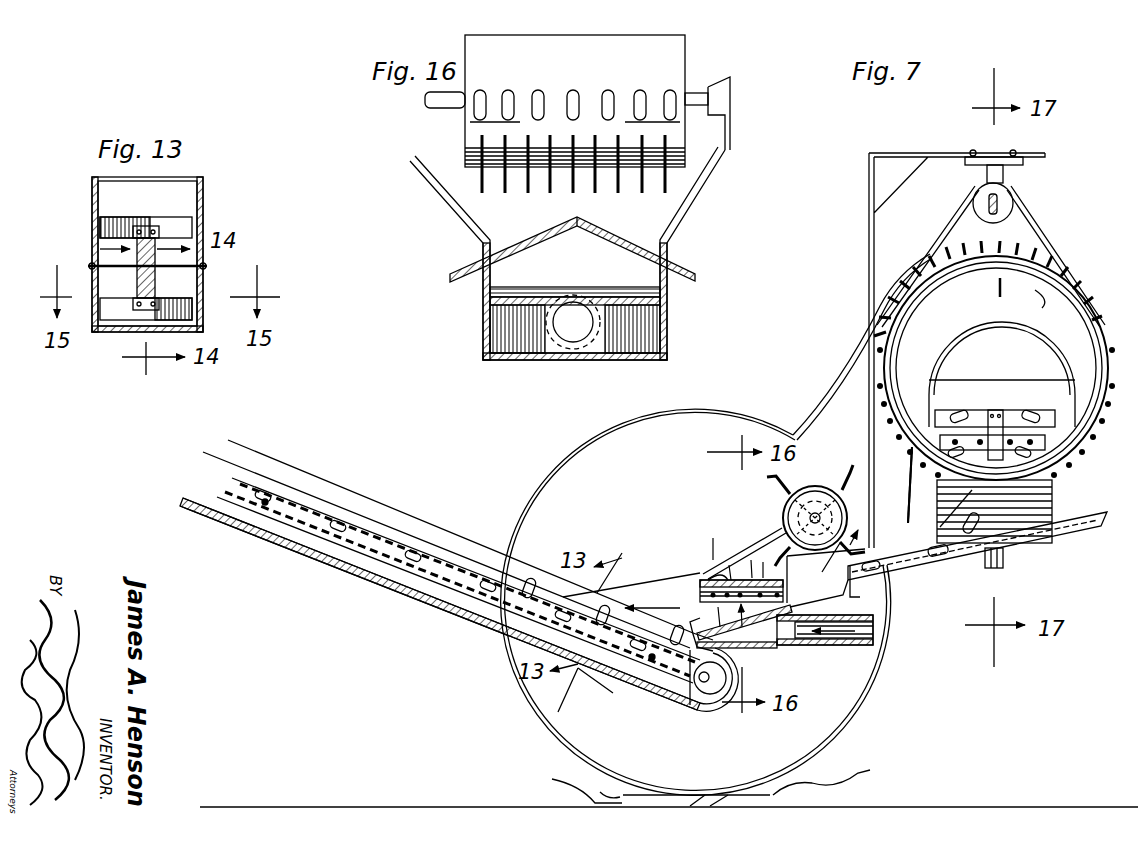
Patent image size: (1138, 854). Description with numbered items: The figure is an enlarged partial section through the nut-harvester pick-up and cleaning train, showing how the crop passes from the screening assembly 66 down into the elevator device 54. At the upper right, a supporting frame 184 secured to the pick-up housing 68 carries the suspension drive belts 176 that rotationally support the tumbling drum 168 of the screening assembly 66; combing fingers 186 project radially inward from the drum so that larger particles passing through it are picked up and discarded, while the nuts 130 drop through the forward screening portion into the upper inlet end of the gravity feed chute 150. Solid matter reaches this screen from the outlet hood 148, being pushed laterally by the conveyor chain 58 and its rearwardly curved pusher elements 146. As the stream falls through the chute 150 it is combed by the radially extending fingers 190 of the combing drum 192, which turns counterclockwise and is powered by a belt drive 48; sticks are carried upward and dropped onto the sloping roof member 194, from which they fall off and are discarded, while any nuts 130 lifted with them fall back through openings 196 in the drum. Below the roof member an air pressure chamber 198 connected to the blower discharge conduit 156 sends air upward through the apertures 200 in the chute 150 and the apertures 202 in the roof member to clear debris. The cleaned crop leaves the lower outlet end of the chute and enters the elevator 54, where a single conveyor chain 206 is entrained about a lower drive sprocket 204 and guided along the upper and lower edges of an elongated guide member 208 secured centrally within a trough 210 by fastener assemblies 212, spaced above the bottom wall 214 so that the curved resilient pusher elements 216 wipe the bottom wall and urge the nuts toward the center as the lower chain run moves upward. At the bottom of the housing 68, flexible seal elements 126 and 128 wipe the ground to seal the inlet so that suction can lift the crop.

In FIG. 7, the belt drive 48 is at (752, 548).
In FIG. 7, the elevator device 54 is at (362, 580).
In FIG. 7, the conveyor chain 58 is at (1005, 562).
In FIG. 7, the rotatable screening assembly 66 is at (1088, 258).
In FIG. 7, the housing 68 is at (590, 448).
In FIG. 7, the flexible seal element 126 is at (638, 780).
In FIG. 7, the flexible seal element 128 is at (786, 782).
In FIG. 7, the nuts 130 is at (930, 549).
In FIG. 7, the resilient pusher elements 146 is at (1012, 410).
In FIG. 7, the outlet hood 148 is at (940, 356).
In FIG. 16, the gravity feed chute 150 is at (645, 300).
In FIG. 7, the gravity feed chute 150 is at (962, 562).
In FIG. 7, the blower discharge conduit 156 is at (845, 645).
In FIG. 7, the tumbling drum 168 is at (955, 262).
In FIG. 7, the suspension drive belts 176 is at (1040, 240).
In FIG. 7, the supporting frame 184 is at (900, 153).
In FIG. 7, the combing fingers 186 is at (1000, 292).
In FIG. 16, the combing fingers 190 is at (640, 180).
In FIG. 7, the combing fingers 190 is at (772, 487).
In FIG. 16, the combing drum 192 is at (665, 56).
In FIG. 7, the combing drum 192 is at (830, 486).
In FIG. 16, the sloping roof member 194 is at (470, 264).
In FIG. 7, the sloping roof member 194 is at (705, 567).
In FIG. 16, the openings 196 is at (630, 96).
In FIG. 7, the openings 196 is at (809, 487).
In FIG. 16, the air pressure chamber 198 is at (628, 340).
In FIG. 7, the air pressure chamber 198 is at (790, 642).
In FIG. 16, the apertures 200 is at (495, 300).
In FIG. 7, the apertures 200 is at (755, 646).
In FIG. 16, the apertures 202 is at (515, 250).
In FIG. 7, the lower drive sprocket 204 is at (685, 688).
In FIG. 13, the conveyor chain 206 is at (143, 228).
In FIG. 7, the conveyor chain 206 is at (410, 546).
In FIG. 13, the elongated guide member 208 is at (150, 286).
In FIG. 7, the elongated guide member 208 is at (323, 528).
In FIG. 13, the trough 210 is at (100, 242).
In FIG. 13, the fastener assemblies 212 is at (108, 266).
In FIG. 13, the bottom wall 214 is at (122, 328).
In FIG. 13, the resilient pusher elements 216 is at (115, 308).